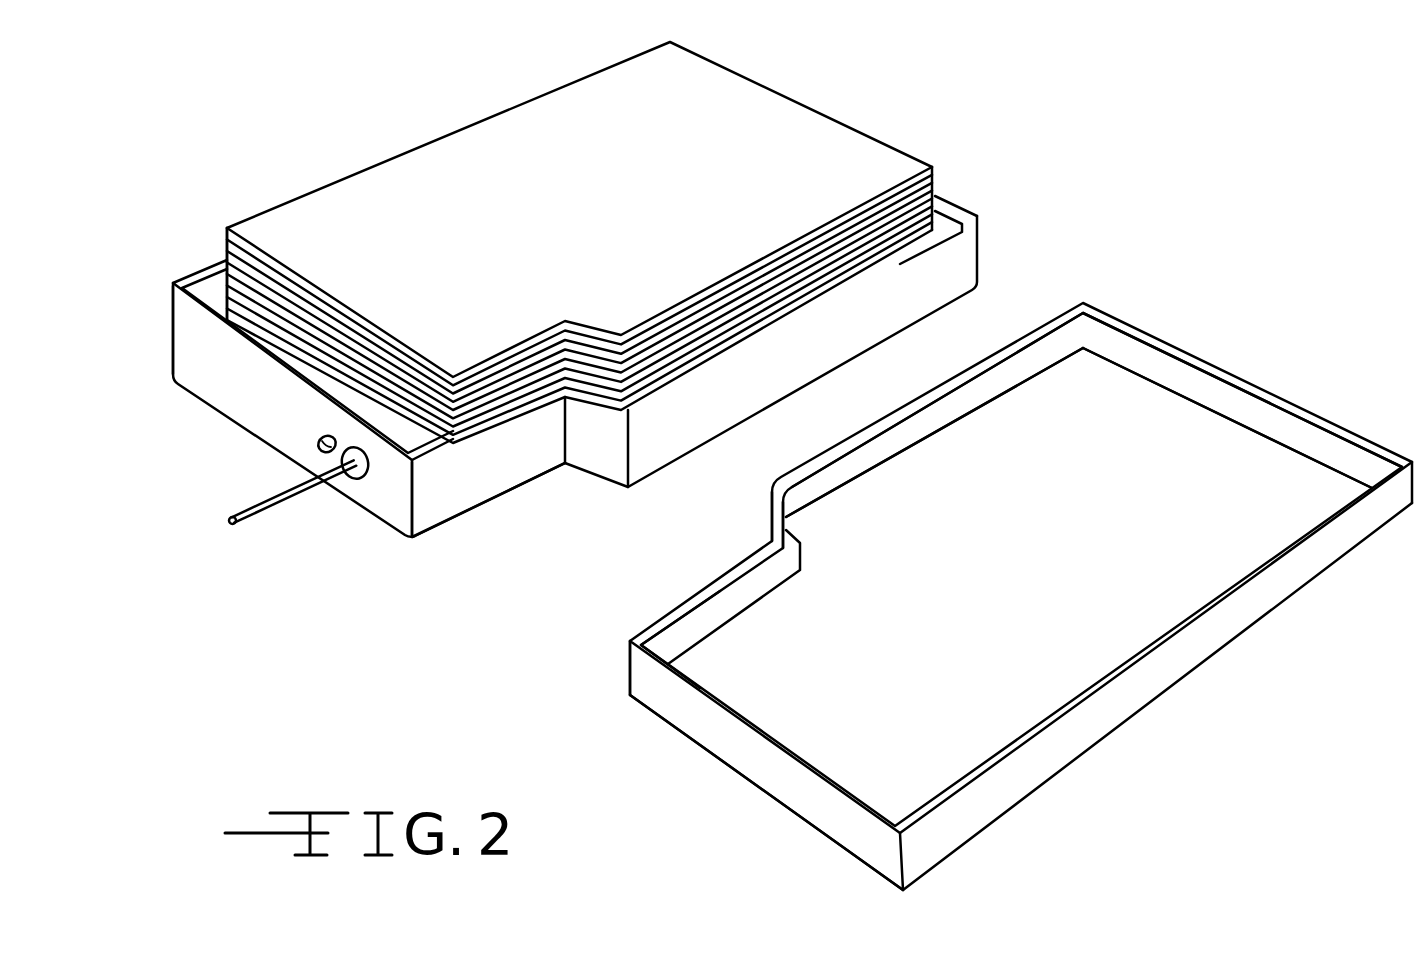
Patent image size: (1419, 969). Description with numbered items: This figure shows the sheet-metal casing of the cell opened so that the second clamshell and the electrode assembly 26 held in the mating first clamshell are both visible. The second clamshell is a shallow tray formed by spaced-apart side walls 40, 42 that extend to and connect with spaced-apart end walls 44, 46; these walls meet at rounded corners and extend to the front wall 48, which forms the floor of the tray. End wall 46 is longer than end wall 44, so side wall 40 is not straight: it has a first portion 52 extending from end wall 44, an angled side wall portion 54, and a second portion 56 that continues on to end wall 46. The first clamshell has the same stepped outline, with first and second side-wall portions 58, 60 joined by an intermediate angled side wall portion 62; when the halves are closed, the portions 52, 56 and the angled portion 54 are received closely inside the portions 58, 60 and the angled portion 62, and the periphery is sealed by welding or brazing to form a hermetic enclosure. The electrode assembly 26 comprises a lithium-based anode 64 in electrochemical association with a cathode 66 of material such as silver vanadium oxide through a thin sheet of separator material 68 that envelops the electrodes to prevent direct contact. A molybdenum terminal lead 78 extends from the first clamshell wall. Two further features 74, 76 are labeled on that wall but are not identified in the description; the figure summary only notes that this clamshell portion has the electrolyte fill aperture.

The electrode assembly 26 is at (842, 122).
The side wall 40 is at (1060, 335).
The side wall 42 is at (1110, 717).
The end wall 44 is at (772, 775).
The end wall 46 is at (1240, 403).
The front wall 48 is at (1272, 468).
The first portion of side wall 52 is at (685, 630).
The angled side wall portion 54 is at (772, 527).
The second portion of side wall 56 is at (1000, 372).
The first portion of side wall 58 is at (450, 490).
The second portion of side wall 60 is at (980, 250).
The intermediate angled side wall portion 62 is at (597, 448).
The anode 64 is at (197, 273).
The cathode 66 is at (225, 260).
The separator material 68 is at (225, 247).
The aperture 74 is at (318, 442).
The aperture 76 is at (352, 483).
The terminal lead 78 is at (236, 522).